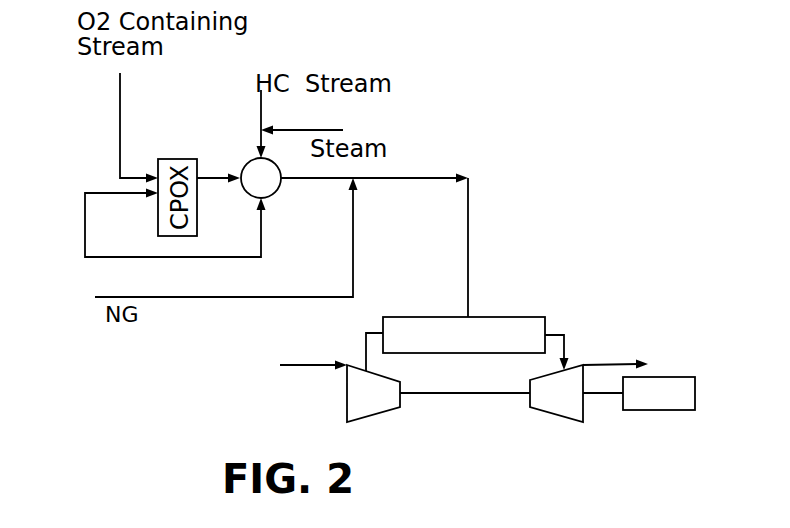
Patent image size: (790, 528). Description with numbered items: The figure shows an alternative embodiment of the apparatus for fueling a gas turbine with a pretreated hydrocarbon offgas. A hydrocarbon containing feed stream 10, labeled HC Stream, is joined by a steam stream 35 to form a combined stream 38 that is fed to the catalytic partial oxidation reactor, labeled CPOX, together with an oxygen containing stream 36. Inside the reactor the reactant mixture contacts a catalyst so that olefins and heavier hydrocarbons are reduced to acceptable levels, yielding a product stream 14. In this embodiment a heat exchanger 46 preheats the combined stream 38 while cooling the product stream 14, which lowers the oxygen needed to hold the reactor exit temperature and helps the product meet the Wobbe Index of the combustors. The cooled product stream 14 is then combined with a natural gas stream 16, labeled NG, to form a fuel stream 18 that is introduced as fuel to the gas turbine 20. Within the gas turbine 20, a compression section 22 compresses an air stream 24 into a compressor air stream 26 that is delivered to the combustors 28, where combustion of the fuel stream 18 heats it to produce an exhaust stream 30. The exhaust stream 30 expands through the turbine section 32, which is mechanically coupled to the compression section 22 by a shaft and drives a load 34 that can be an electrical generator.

The hydrocarbon containing feed stream 10 is at (261, 112).
The product stream 14 is at (208, 179).
The natural gas stream 16 is at (262, 297).
The fuel stream 18 is at (420, 178).
The gas turbine 20 is at (560, 280).
The compression section 22 is at (388, 398).
The air stream 24 is at (308, 368).
The compressor air stream 26 is at (380, 333).
The combustors 28 is at (485, 317).
The exhaust stream 30 is at (565, 343).
The turbine section 32 is at (550, 397).
The load 34 is at (643, 410).
The steam stream 35 is at (297, 127).
The oxygen containing stream 36 is at (120, 132).
The combined stream 38 is at (115, 195).
The heat exchanger 46 is at (255, 177).